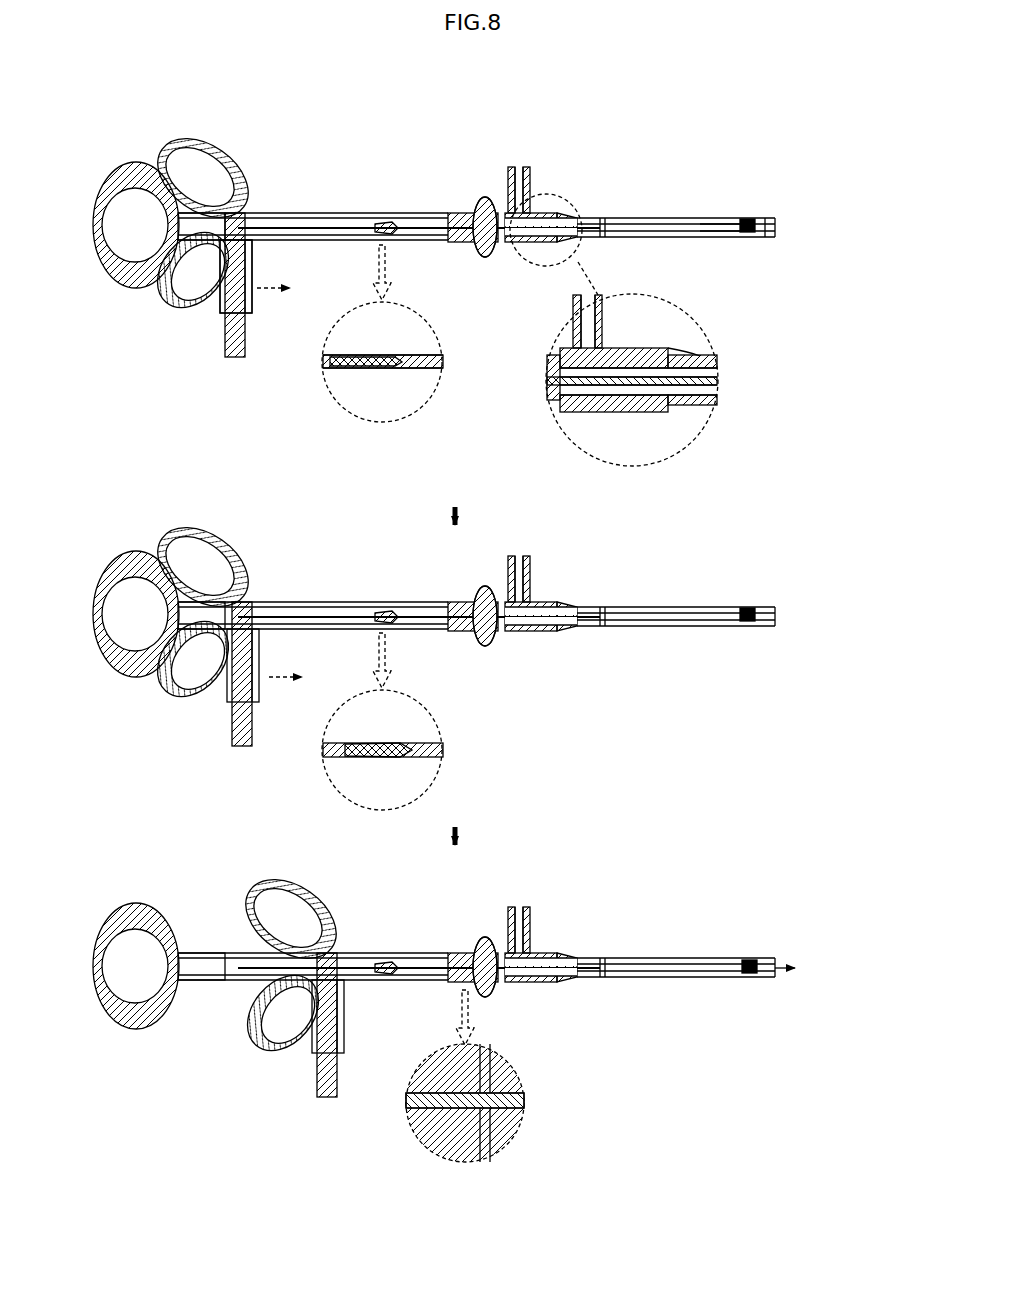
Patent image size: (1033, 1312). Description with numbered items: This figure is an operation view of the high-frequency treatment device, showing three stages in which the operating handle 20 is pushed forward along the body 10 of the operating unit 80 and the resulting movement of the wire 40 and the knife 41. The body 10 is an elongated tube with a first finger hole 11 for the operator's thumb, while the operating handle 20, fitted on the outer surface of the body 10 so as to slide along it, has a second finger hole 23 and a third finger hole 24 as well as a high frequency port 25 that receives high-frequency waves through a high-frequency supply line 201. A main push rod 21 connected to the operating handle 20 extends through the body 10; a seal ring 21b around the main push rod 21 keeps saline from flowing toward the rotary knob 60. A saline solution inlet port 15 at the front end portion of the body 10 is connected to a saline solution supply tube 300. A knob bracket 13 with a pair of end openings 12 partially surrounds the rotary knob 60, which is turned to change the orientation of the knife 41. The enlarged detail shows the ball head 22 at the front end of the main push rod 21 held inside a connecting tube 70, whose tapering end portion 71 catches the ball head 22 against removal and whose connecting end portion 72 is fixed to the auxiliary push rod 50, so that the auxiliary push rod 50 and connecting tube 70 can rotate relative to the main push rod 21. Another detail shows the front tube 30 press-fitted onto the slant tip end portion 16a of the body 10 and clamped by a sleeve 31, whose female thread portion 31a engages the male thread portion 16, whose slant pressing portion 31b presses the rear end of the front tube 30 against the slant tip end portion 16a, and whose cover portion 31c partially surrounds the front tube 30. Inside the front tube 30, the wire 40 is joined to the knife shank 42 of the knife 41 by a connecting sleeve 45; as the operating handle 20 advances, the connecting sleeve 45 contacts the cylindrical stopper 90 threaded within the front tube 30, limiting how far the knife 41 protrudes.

The body 10 is at (313, 210).
The first finger hole 11 is at (135, 245).
The end openings 12 is at (485, 258).
The knob bracket 13 is at (465, 212).
The saline solution inlet port 15 is at (598, 300).
The male thread portion 16 is at (612, 412).
The slant tip end portion 16a is at (640, 412).
The operating handle 20 is at (211, 225).
The main push rod 21 is at (328, 362).
The seal ring 21b is at (560, 385).
The ball head 22 is at (370, 372).
The second finger hole 23 is at (215, 158).
The third finger hole 24 is at (195, 292).
The high frequency port 25 is at (253, 262).
The front tube 30 is at (658, 216).
The sleeve 31 is at (690, 345).
The female thread portion 31a is at (652, 346).
The slant pressing portion 31b is at (662, 365).
The cover portion 31c is at (706, 352).
The wire 40 is at (625, 216).
The knife 41 is at (778, 228).
The knife shank 42 is at (746, 237).
The connecting sleeve 45 is at (720, 233).
The auxiliary push rod 50 is at (433, 352).
The rotary knob 60 is at (483, 200).
The connecting tube 70 is at (402, 372).
The tapering end portion 71 is at (345, 352).
The connecting end portion 72 is at (396, 354).
The operating unit 80 is at (365, 182).
The stopper 90 is at (748, 216).
The high-frequency supply line 201 is at (247, 330).
The saline solution supply tube 300 is at (530, 176).